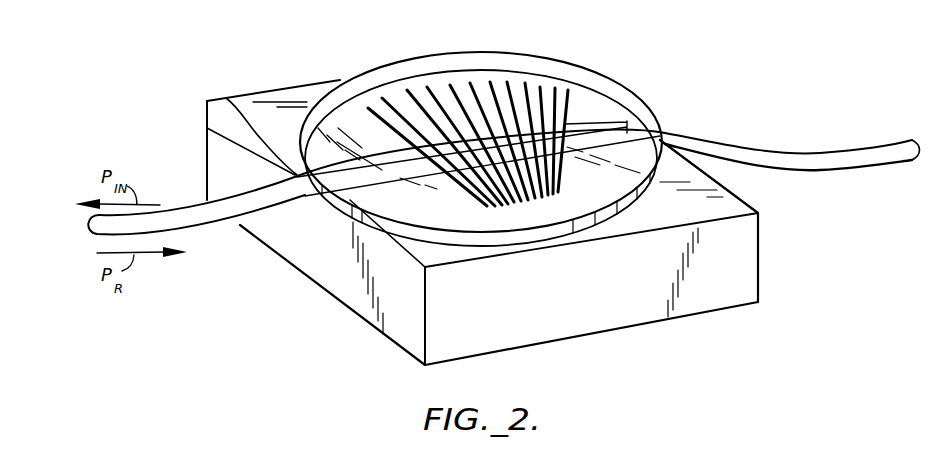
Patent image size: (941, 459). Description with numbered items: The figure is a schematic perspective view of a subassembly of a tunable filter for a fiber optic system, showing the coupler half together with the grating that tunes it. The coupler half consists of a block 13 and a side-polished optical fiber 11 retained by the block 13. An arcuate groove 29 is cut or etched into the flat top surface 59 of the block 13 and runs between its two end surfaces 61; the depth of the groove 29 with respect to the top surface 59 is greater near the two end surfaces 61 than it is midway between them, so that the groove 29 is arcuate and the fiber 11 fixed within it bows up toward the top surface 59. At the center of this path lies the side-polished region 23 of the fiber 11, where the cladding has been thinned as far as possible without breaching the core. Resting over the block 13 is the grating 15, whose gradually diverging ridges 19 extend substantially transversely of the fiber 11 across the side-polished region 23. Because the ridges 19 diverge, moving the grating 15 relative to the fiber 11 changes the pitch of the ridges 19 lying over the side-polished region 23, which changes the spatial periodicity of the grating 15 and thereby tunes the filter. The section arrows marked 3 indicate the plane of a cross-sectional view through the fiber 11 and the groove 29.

The side-polished optical fiber 11 is at (797, 153).
The block 13 is at (606, 339).
The grating 15 is at (584, 78).
The ridges 19 is at (451, 83).
The side-polished region 23 is at (230, 98).
The arcuate groove 29 is at (208, 128).
The flat top surface 59 is at (735, 209).
The end surfaces 61 is at (760, 275).
The section line 3- 3 is at (224, 200).